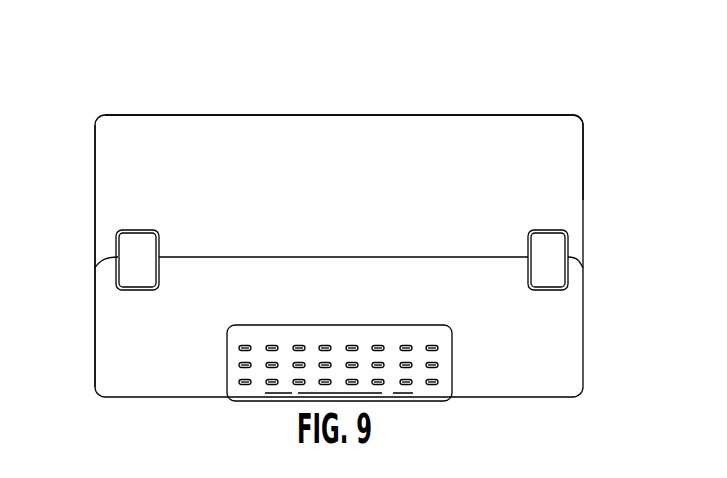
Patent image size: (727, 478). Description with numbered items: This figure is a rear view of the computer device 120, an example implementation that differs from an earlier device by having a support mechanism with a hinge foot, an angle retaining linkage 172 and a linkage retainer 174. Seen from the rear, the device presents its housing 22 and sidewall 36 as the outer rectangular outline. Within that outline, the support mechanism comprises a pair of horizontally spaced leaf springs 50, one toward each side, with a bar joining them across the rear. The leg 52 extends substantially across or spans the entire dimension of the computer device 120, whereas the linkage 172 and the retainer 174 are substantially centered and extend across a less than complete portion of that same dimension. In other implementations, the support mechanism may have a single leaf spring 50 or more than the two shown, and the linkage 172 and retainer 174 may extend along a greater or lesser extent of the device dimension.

The computer device 120 is at (437, 99).
The housing 22 is at (580, 120).
The sidewall 36 is at (599, 164).
The leaf springs 50 is at (122, 246).
The leg 52 is at (113, 342).
The angle retaining linkage 172 is at (232, 368).
The linkage retainer 174 is at (432, 390).